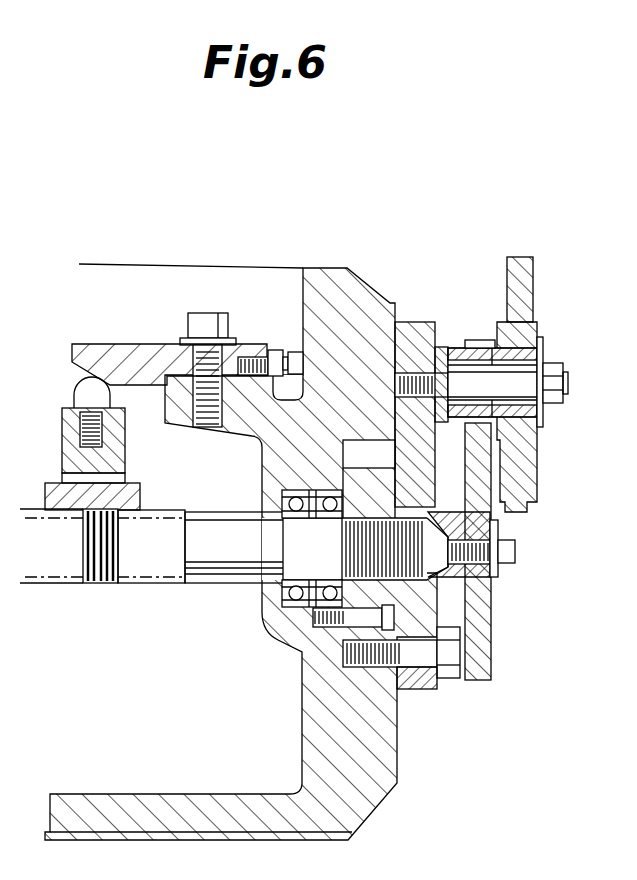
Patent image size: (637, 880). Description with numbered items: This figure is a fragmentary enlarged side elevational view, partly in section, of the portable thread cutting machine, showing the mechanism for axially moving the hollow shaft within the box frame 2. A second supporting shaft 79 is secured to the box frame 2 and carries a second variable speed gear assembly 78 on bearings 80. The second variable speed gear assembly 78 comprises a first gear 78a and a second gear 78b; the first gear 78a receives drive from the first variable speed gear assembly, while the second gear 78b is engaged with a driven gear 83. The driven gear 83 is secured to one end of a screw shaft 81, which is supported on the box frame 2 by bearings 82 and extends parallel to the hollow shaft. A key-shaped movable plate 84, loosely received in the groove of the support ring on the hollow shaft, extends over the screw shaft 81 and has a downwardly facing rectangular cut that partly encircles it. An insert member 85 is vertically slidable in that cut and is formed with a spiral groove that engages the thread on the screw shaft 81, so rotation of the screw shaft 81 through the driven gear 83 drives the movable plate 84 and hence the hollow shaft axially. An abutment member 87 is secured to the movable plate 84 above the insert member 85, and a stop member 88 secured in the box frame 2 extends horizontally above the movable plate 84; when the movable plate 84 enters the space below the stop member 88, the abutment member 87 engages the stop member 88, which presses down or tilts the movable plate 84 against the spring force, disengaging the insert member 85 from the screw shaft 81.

The box frame 2 is at (386, 302).
The second variable speed gear assembly 78 is at (535, 302).
The first gear 78a is at (528, 272).
The second gear 78b is at (471, 340).
The second supporting shaft 79 is at (533, 386).
The bearings 80 is at (520, 363).
The screw shaft 81 is at (218, 585).
The bearings 82 is at (287, 603).
The driven gear 83 is at (483, 643).
The movable plate 84 is at (62, 446).
The insert member 85 is at (55, 503).
The abutment member 87 is at (76, 393).
The stop member 88 is at (125, 344).